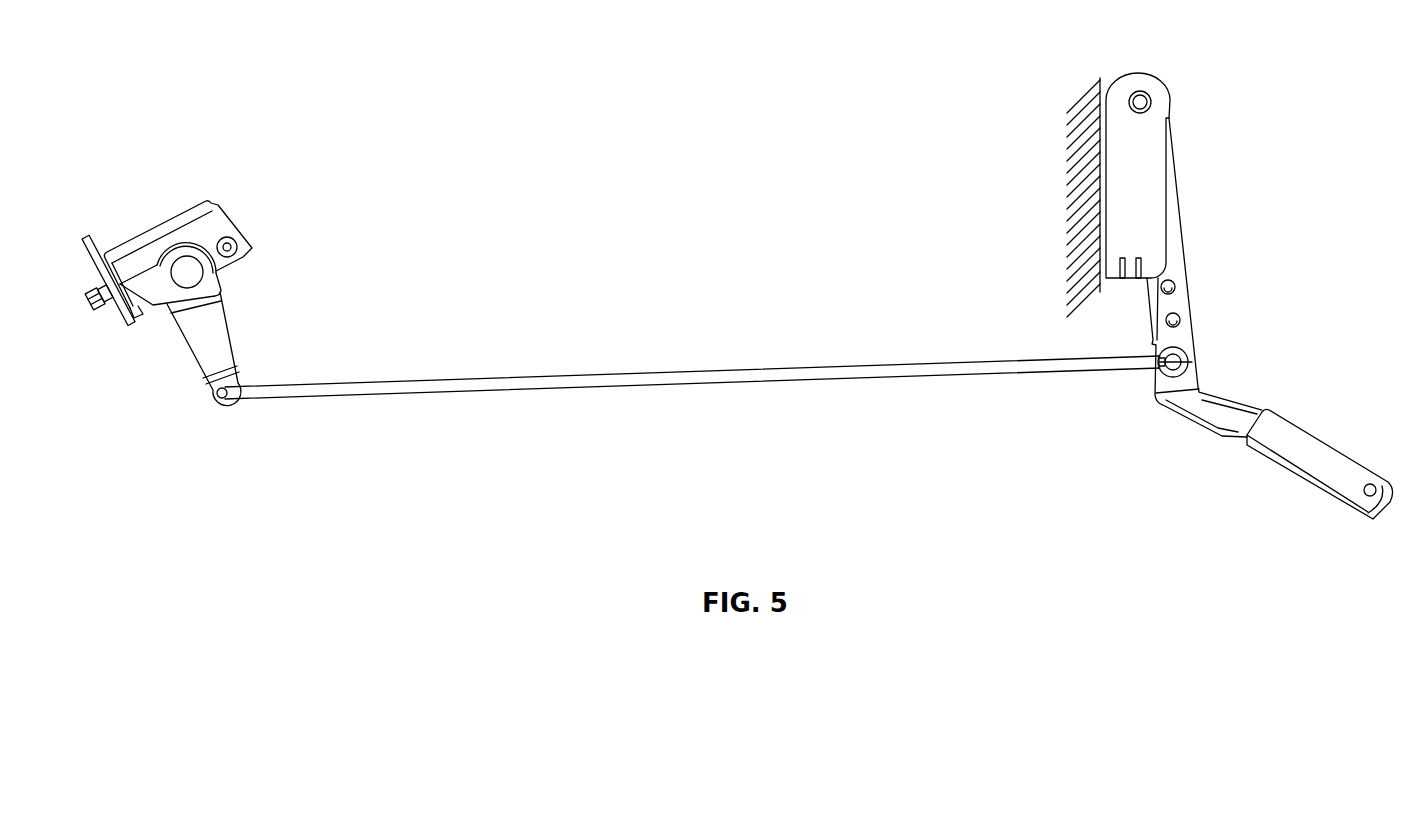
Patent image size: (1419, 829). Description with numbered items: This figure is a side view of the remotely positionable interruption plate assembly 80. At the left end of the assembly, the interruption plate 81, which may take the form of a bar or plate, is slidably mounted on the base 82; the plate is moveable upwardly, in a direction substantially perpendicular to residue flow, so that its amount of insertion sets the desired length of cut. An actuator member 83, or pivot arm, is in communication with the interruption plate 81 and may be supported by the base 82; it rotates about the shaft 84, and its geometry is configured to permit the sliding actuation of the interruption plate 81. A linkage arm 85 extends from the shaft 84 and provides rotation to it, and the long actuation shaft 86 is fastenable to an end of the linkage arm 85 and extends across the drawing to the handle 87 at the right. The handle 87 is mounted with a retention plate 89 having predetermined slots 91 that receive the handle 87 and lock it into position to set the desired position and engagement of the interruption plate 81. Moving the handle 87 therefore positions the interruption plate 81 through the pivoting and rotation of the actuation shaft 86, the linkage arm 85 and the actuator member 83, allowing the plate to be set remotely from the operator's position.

The interruption plate assembly 80 is at (226, 96).
The interruption plate 81 is at (128, 328).
The base 82 is at (133, 260).
The actuator member 83 is at (158, 302).
The shaft 84 is at (187, 270).
The linkage arm 85 is at (223, 350).
The actuation shaft 86 is at (572, 372).
The handle 87 is at (1287, 437).
The retention plate 89 is at (1148, 167).
The slots 91 is at (1122, 272).